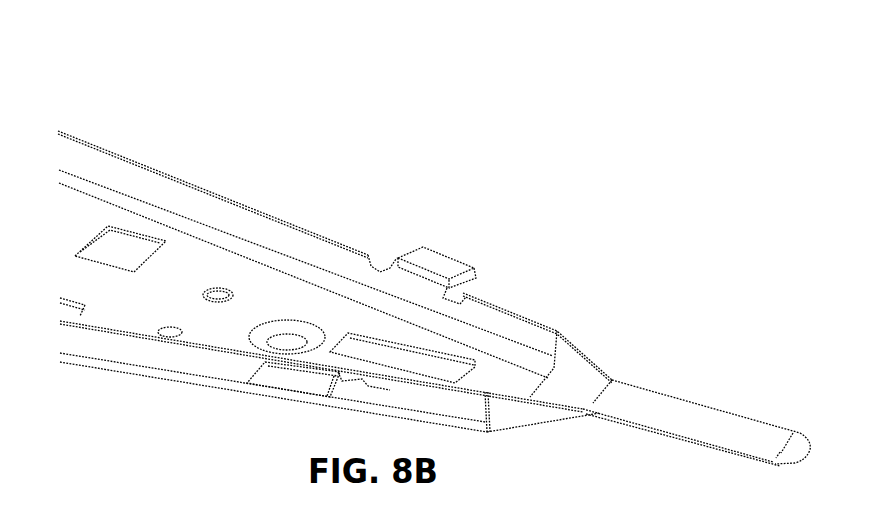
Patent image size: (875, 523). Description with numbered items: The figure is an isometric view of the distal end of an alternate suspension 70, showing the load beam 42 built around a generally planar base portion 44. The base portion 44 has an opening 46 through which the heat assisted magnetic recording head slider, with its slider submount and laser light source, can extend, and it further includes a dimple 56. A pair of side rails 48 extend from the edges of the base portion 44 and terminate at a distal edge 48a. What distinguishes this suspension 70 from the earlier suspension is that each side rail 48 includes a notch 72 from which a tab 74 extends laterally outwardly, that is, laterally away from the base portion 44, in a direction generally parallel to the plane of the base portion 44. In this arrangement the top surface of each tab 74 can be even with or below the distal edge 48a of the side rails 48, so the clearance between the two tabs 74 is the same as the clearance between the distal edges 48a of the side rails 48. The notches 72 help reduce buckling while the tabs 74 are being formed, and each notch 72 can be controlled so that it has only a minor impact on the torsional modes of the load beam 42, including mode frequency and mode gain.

The load beam 42 is at (104, 150).
The base portion 44 is at (198, 268).
The opening 46 is at (348, 342).
The side rail 48 is at (286, 237).
The distal edge 48a is at (193, 188).
The dimple 56 is at (253, 335).
The suspension 70 is at (422, 147).
The notch 72 is at (380, 272).
The tab 74 is at (447, 260).